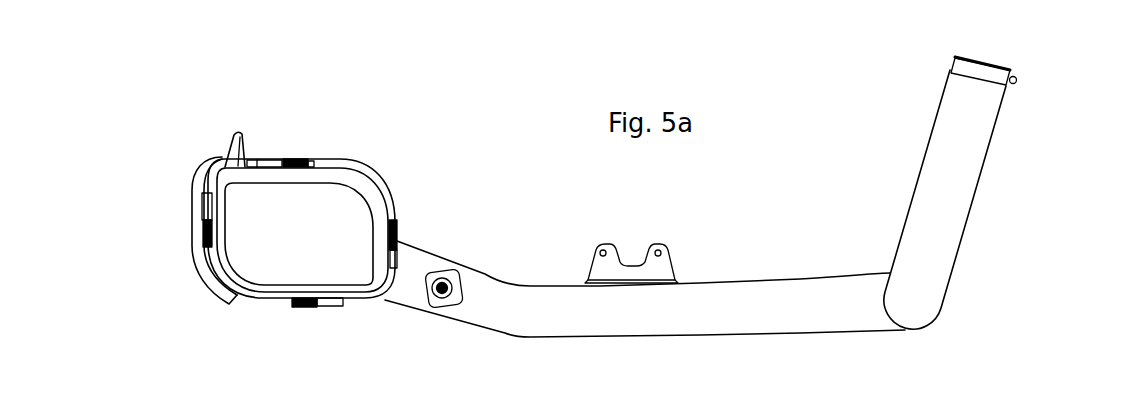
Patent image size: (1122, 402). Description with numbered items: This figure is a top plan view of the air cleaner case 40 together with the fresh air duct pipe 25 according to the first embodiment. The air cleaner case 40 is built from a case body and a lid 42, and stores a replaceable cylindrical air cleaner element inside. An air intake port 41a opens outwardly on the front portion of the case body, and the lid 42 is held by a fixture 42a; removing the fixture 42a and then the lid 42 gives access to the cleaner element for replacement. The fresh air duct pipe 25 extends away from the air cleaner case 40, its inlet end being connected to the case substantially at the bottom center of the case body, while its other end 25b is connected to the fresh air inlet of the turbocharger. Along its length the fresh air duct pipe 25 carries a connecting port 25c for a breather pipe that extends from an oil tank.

The fresh air duct pipe 25 is at (750, 290).
The other end of the fresh air duct pipe 25b is at (967, 65).
The connecting port 25c is at (452, 280).
The air cleaner case 40 is at (398, 193).
The air intake port 41a is at (191, 272).
The lid 42 is at (347, 202).
The fixture 42a is at (323, 308).